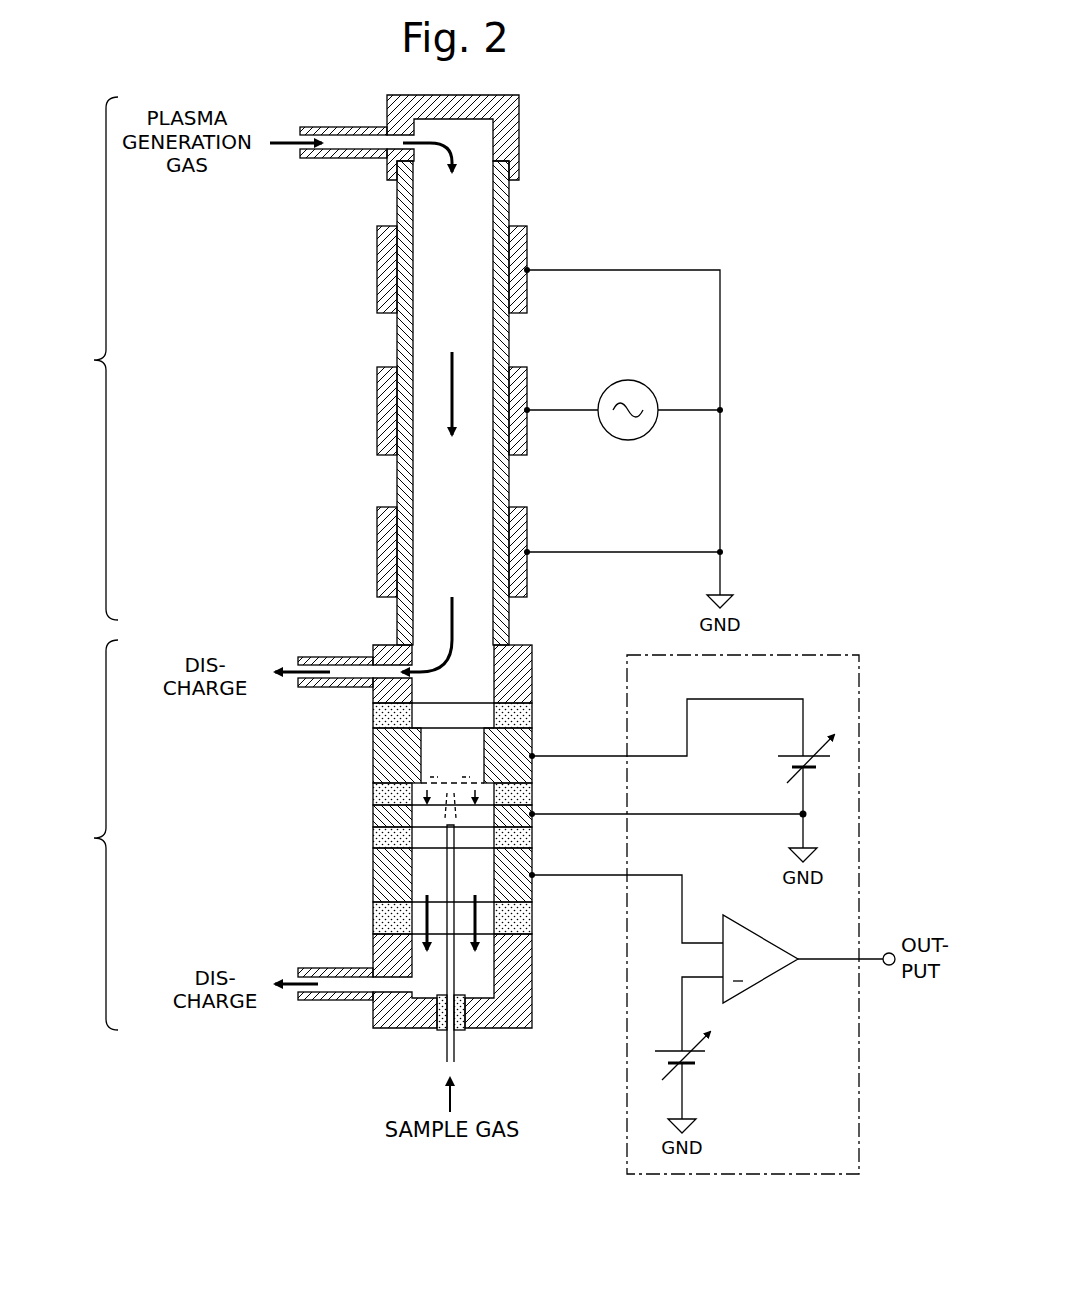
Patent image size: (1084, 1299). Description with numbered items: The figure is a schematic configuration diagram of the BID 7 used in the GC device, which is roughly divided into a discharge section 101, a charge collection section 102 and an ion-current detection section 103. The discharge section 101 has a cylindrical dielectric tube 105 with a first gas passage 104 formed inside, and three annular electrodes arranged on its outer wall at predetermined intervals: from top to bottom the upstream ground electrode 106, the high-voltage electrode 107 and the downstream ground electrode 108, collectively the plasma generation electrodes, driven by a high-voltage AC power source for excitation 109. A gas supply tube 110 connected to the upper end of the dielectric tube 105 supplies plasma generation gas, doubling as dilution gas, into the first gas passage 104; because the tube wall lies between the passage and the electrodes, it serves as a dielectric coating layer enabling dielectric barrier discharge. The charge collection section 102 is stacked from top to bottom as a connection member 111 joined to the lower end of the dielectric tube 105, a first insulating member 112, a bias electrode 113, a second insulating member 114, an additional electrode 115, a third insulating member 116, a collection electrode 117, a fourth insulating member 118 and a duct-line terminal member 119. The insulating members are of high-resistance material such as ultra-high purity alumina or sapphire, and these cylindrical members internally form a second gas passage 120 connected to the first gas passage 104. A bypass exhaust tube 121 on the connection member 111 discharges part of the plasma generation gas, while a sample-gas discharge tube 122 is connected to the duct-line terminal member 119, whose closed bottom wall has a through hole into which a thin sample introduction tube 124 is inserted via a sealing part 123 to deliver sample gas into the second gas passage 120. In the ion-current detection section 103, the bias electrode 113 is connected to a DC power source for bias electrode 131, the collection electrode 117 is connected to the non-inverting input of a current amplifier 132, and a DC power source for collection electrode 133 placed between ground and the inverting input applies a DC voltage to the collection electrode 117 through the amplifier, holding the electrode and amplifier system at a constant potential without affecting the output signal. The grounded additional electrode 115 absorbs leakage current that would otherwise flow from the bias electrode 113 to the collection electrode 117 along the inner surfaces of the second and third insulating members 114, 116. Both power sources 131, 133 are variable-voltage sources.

The BID 7 is at (772, 130).
The discharge section 101 is at (80, 358).
The charge collection section 102 is at (80, 835).
The ion-current detection section 103 is at (860, 691).
The first gas passage 104 is at (442, 225).
The cylindrical dielectric tube 105 is at (511, 212).
The upstream ground electrode 106 is at (377, 290).
The high-voltage electrode 107 is at (377, 415).
The downstream ground electrode 108 is at (377, 556).
The high-voltage AC power source for excitation 109 is at (647, 384).
The gas supply tube 110 is at (329, 125).
The connection member 111 is at (533, 677).
The first insulating member 112 is at (533, 713).
The bias electrode 113 is at (533, 746).
The second insulating member 114 is at (373, 794).
The additional electrode 115 is at (373, 818).
The third insulating member 116 is at (373, 838).
The collection electrode 117 is at (373, 870).
The fourth insulating member 118 is at (373, 915).
The duct-line terminal member 119 is at (501, 1030).
The second gas passage 120 is at (440, 752).
The bypass exhaust tube 121 is at (331, 656).
The sample-gas discharge tube 122 is at (329, 1003).
The sealing part 123 is at (437, 1031).
The sample introduction tube 124 is at (456, 973).
The DC power source for bias electrode 131 is at (785, 752).
The current amplifier 132 is at (780, 975).
The DC power source for collection electrode 133 is at (706, 1068).